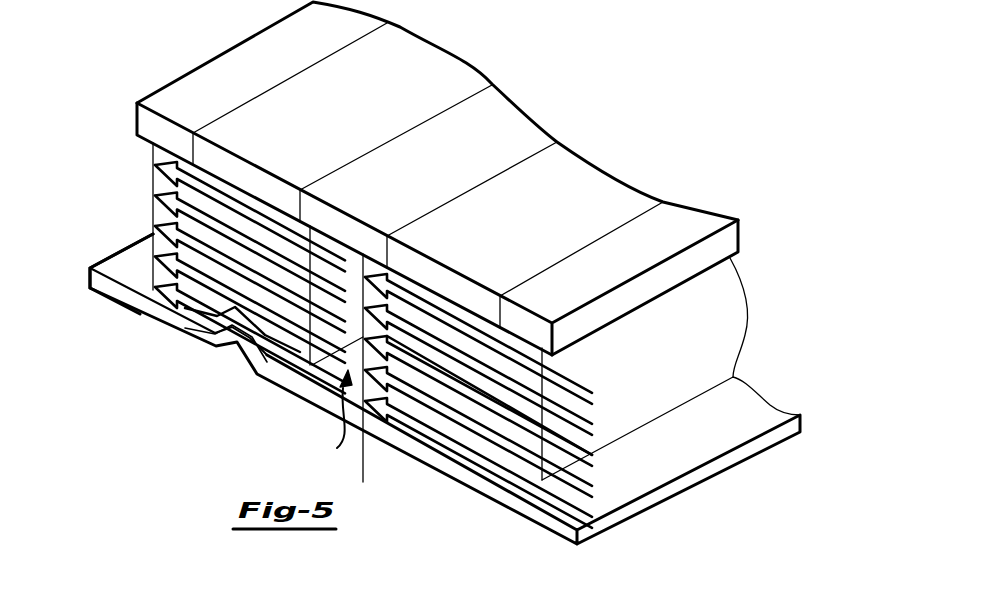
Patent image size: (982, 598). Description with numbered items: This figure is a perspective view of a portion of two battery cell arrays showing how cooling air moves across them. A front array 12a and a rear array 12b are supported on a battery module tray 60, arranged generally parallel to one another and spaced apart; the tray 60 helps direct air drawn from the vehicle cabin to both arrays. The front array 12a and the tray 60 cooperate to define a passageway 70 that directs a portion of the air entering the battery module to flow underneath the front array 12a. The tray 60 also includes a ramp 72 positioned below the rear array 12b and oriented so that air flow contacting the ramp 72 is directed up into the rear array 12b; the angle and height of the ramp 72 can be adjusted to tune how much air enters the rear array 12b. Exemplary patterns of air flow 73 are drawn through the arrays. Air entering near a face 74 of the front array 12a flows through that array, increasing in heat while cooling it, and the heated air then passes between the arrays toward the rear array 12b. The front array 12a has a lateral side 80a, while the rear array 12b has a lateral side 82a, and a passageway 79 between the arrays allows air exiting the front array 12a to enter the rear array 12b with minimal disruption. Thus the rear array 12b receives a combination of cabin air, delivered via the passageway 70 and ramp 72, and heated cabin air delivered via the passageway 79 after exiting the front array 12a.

The front array 12a is at (523, 228).
The rear array 12b is at (243, 182).
The battery module tray 60 is at (117, 290).
The passageway 70 is at (450, 455).
The ramp 72 is at (218, 348).
The air flow 73 is at (155, 195).
The face 74 is at (575, 452).
The passageway 79 is at (332, 417).
The lateral side 80a is at (705, 317).
The lateral side 82a is at (320, 297).